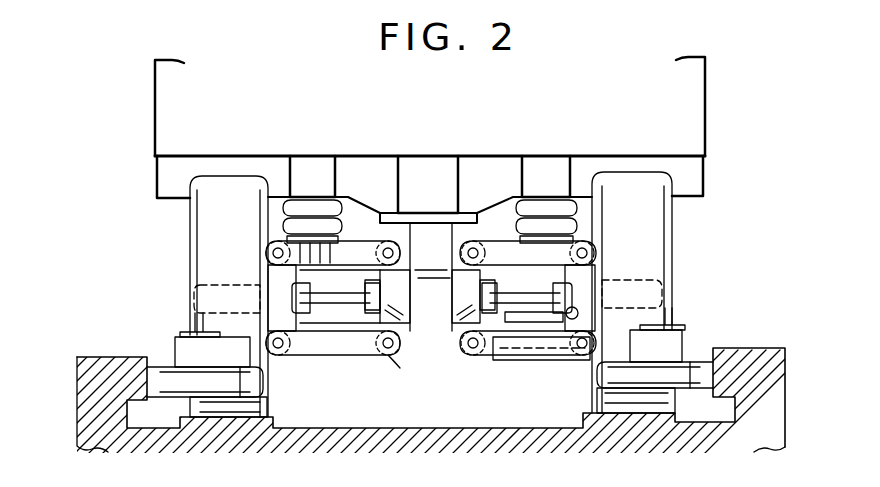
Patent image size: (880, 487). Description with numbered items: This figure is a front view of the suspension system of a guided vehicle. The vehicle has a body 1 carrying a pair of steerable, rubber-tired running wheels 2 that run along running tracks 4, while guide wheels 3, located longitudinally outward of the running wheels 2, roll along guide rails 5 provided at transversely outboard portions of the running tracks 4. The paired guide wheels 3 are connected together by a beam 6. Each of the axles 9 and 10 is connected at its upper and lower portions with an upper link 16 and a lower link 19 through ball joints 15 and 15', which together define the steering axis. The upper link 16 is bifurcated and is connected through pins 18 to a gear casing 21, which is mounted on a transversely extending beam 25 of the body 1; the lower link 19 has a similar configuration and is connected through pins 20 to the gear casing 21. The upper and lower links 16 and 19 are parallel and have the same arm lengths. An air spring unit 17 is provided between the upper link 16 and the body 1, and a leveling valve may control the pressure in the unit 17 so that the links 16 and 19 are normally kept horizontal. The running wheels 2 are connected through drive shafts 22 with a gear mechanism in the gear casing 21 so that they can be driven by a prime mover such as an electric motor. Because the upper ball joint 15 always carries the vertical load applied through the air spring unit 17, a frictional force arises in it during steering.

The body 1 is at (707, 113).
The running wheels 2 is at (650, 223).
The guide wheels 3 is at (167, 378).
The running tracks 4 is at (632, 418).
The guide rails 5 is at (752, 352).
The beam 6 is at (533, 357).
The axle 9 is at (580, 282).
The axle 10 is at (280, 292).
The ball joint 15 is at (305, 240).
The ball joint 15' is at (333, 366).
The upper link 16 is at (348, 245).
The air spring unit 17 is at (290, 207).
The pins 18 is at (393, 253).
The lower link 19 is at (362, 348).
The pins 20 is at (393, 353).
The gear casing 21 is at (435, 313).
The drive shafts 22 is at (332, 300).
The beam 25 is at (502, 172).